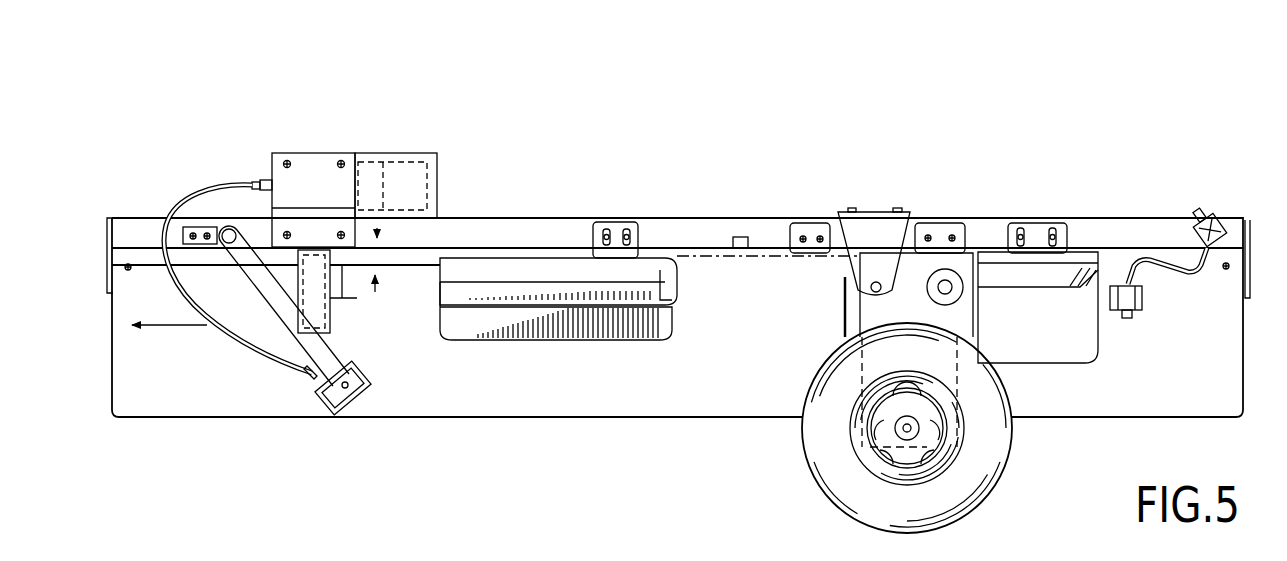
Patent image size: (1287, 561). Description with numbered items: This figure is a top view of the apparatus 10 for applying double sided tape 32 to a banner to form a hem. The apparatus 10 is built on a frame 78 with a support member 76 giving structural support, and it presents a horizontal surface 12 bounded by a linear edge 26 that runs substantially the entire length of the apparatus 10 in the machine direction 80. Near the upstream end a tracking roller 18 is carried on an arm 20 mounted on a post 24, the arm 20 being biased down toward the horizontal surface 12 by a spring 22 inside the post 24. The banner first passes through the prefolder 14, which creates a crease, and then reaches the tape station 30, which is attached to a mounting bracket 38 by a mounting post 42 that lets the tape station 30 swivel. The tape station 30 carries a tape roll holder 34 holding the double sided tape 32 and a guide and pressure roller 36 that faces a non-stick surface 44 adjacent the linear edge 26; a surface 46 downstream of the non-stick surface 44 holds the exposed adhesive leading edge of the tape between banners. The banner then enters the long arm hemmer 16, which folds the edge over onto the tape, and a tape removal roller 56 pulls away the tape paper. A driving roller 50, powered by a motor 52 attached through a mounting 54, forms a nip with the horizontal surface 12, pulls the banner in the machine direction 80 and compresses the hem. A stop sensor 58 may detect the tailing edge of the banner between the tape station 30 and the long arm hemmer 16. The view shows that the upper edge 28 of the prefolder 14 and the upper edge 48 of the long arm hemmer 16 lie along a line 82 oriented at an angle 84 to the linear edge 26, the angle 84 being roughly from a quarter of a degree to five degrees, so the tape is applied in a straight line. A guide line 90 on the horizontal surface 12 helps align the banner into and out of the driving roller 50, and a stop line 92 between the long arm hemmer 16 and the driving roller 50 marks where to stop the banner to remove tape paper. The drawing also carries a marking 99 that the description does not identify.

The apparatus 10 is at (946, 82).
The horizontal surface 12 is at (600, 387).
The prefolder 14 is at (1045, 277).
The long arm hemmer 16 is at (573, 275).
The tracking roller 18 is at (1140, 303).
The arm 20 is at (1190, 277).
The spring 22 is at (1190, 218).
The post 24 is at (1223, 235).
The linear edge 26 is at (480, 240).
The upper edge of prefolder 28 is at (1073, 255).
The tape station 30 is at (887, 436).
The double sided tape 32 is at (982, 480).
The tape roll holder 34 is at (915, 437).
The guide and pressure roller 36 is at (943, 283).
The mounting bracket 38 is at (870, 218).
The mounting post 42 is at (878, 288).
The non-stick surface 44 is at (823, 258).
The surface 46 is at (777, 258).
The upper edge of long arm hemmer 48 is at (527, 263).
The driving roller 50 is at (307, 277).
The motor 52 is at (407, 168).
The mounting 54 is at (320, 233).
The tape removal roller 56 is at (327, 390).
The stop sensor 58 is at (738, 237).
The support member 76 is at (108, 252).
The frame 78 is at (143, 230).
The machine direction 80 is at (170, 327).
The line 82 is at (720, 258).
The angle 84 is at (375, 257).
The guide line 90 is at (142, 284).
The stop line 92 is at (352, 270).
The lever 99 is at (347, 280).